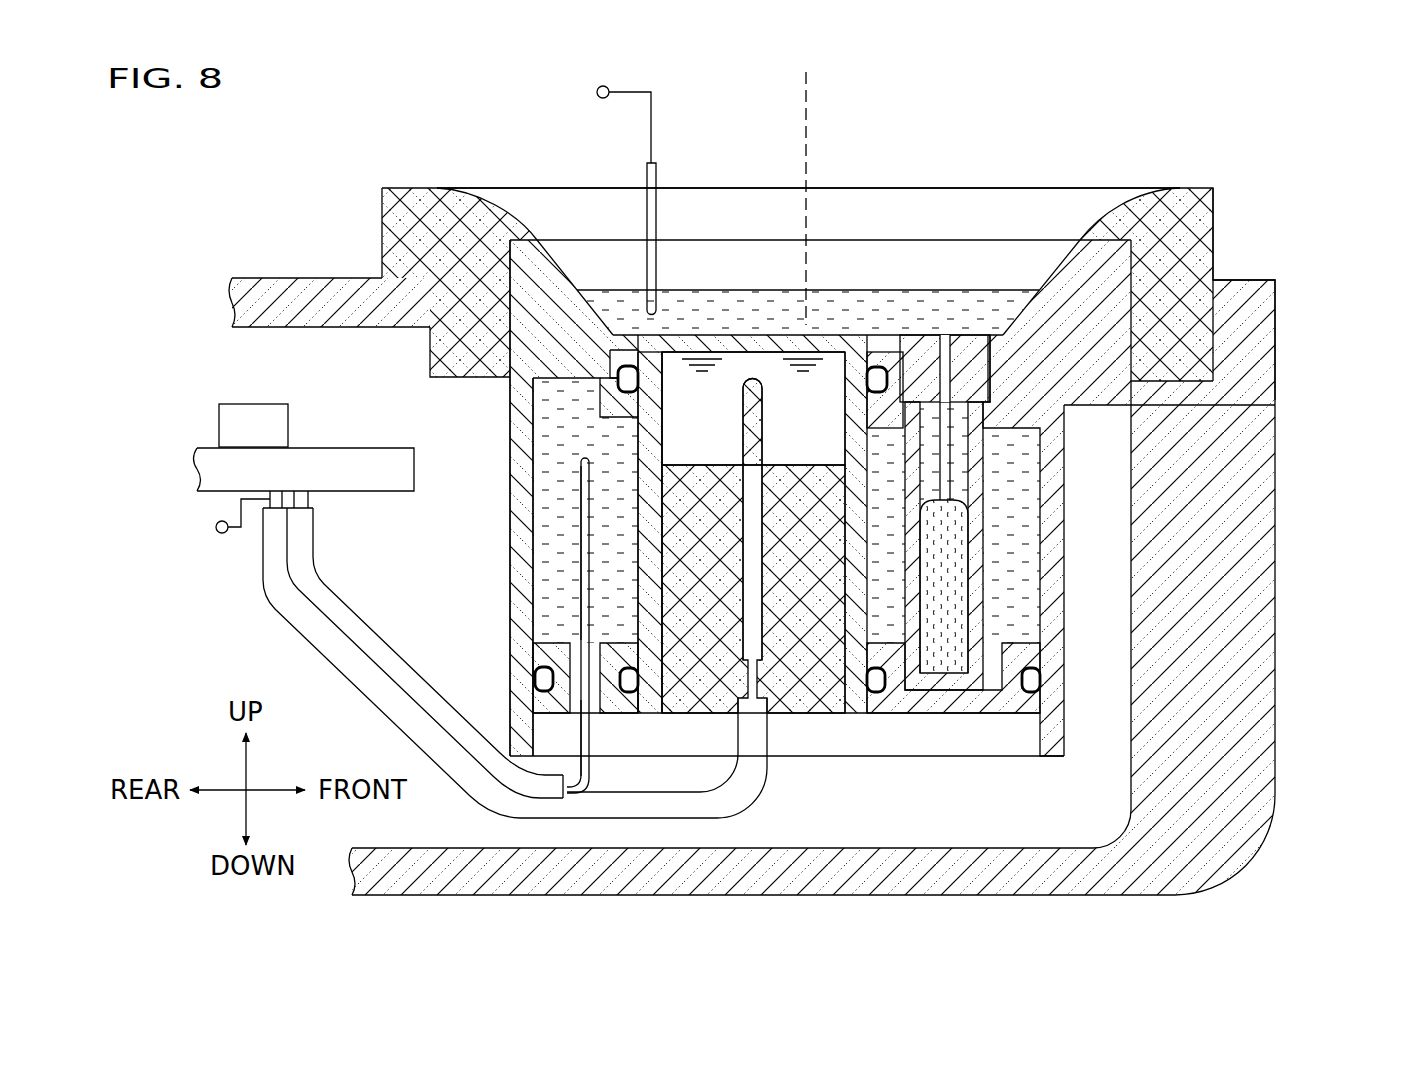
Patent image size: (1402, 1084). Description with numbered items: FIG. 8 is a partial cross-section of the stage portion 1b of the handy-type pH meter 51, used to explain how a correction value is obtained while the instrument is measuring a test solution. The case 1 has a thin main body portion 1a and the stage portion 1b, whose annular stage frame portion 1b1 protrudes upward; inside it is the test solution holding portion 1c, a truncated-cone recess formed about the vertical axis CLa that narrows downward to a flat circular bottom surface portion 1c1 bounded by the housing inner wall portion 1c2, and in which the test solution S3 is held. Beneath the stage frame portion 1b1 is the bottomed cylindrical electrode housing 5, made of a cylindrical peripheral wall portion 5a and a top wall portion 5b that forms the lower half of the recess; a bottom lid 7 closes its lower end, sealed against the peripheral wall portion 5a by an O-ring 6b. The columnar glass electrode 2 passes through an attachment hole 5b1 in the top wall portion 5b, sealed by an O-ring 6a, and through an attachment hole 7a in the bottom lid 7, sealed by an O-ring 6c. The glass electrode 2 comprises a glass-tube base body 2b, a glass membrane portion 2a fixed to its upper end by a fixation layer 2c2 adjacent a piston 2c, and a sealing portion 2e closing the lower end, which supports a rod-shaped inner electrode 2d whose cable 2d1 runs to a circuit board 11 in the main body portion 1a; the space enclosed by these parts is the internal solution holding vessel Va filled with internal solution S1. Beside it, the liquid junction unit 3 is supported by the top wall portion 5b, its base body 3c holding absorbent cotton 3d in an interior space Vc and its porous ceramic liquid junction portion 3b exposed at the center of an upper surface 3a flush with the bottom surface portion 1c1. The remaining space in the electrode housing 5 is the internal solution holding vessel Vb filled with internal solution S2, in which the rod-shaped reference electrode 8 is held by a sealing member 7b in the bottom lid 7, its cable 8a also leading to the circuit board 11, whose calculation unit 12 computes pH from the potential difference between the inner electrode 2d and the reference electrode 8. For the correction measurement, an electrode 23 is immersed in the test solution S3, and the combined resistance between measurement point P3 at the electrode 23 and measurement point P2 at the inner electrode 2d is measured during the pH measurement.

The case 1 is at (1280, 438).
The main body portion 1a is at (299, 270).
The stage portion 1b is at (405, 178).
The stage frame portion 1b1 is at (1160, 195).
The test solution holding portion 1c is at (983, 222).
The bottom surface portion 1c1 is at (885, 337).
The housing inner wall portion 1c2 is at (1065, 225).
The glass electrode 2 is at (717, 310).
The glass membrane portion 2a is at (675, 320).
The base body 2b is at (640, 503).
The piston 2c is at (837, 353).
The fixation layer 2c2 is at (630, 335).
The inner electrode 2d is at (752, 375).
The cable 2d1 is at (730, 810).
The sealing portion 2e is at (810, 716).
The liquid junction unit 3 is at (925, 303).
The upper surface 3a is at (990, 300).
The liquid junction portion 3b is at (943, 337).
The base body 3c is at (990, 610).
The absorbent cotton 3d is at (945, 603).
The electrode housing 5 is at (1050, 640).
The peripheral wall portion 5a is at (533, 528).
The top wall portion 5b is at (603, 275).
The attachment hole 5b1 is at (663, 400).
The O-ring 6a is at (623, 378).
The O-ring 6b is at (535, 672).
The O-ring 6c is at (623, 693).
The bottom lid 7 is at (617, 716).
The attachment hole 7a is at (650, 712).
The sealing member 7b is at (580, 720).
The reference electrode 8 is at (575, 612).
The cable 8a is at (349, 626).
The circuit board 11 is at (331, 448).
The calculation unit 12 is at (253, 404).
The electrode 23 is at (647, 175).
The pH meter 51 is at (1270, 242).
The measurement point P2 is at (219, 544).
The measurement point P3 is at (606, 120).
The internal solution S1 is at (655, 448).
The internal solution S2 is at (560, 595).
The test solution S3 is at (782, 305).
The internal solution holding vessel Va is at (700, 435).
The internal solution holding vessel Vb is at (560, 565).
The interior space Vc is at (1064, 402).
The axis CLa is at (812, 88).